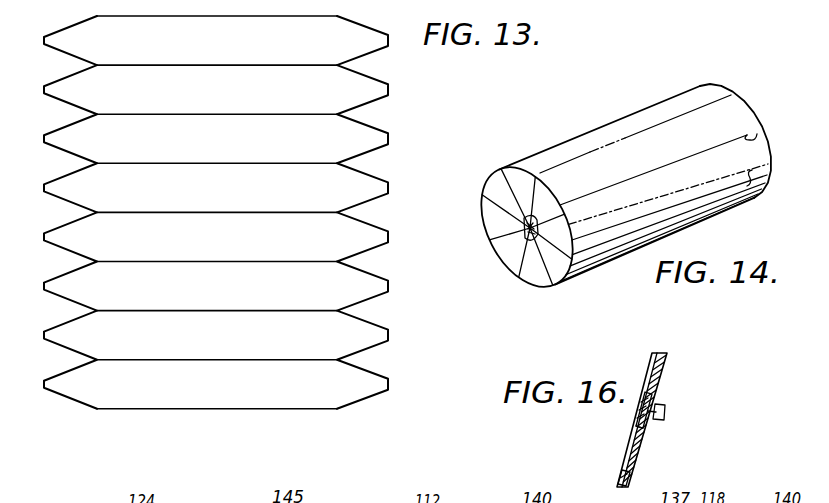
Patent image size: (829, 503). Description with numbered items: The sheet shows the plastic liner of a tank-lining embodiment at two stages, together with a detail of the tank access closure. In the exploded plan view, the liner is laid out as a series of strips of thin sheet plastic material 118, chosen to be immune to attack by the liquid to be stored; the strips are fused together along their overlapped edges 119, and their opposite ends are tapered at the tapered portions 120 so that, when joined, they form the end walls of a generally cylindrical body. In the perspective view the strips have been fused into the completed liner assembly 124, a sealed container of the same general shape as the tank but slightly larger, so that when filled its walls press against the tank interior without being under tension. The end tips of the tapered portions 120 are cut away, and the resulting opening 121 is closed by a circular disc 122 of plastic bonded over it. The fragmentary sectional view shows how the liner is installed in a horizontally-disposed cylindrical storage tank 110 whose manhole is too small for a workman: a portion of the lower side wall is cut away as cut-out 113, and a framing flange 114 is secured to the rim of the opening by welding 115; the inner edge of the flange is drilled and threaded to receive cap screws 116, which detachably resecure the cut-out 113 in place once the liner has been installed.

In FIG. 13, the thin sheet plastic material strips 118 is at (93, 179).
In FIG. 14, the thin sheet plastic material strips 118 is at (593, 236).
In FIG. 13, the overlapped edges 119 is at (283, 114).
In FIG. 14, the overlapped edges 119 is at (757, 140).
In FIG. 13, the tapered portions 120 is at (380, 111).
In FIG. 14, the tapered portions 120 is at (558, 262).
In FIG. 14, the opening 121 is at (522, 242).
In FIG. 14, the circular disc 122 is at (524, 228).
In FIG. 14, the liner assembly 124 is at (561, 146).
In FIG. 16, the cylindrical storage tank 110 is at (642, 456).
In FIG. 16, the cut-out portion 113 is at (661, 368).
In FIG. 16, the framing flange 114 is at (632, 437).
In FIG. 16, the welding 115 is at (633, 443).
In FIG. 16, the cap screws 116 is at (666, 414).